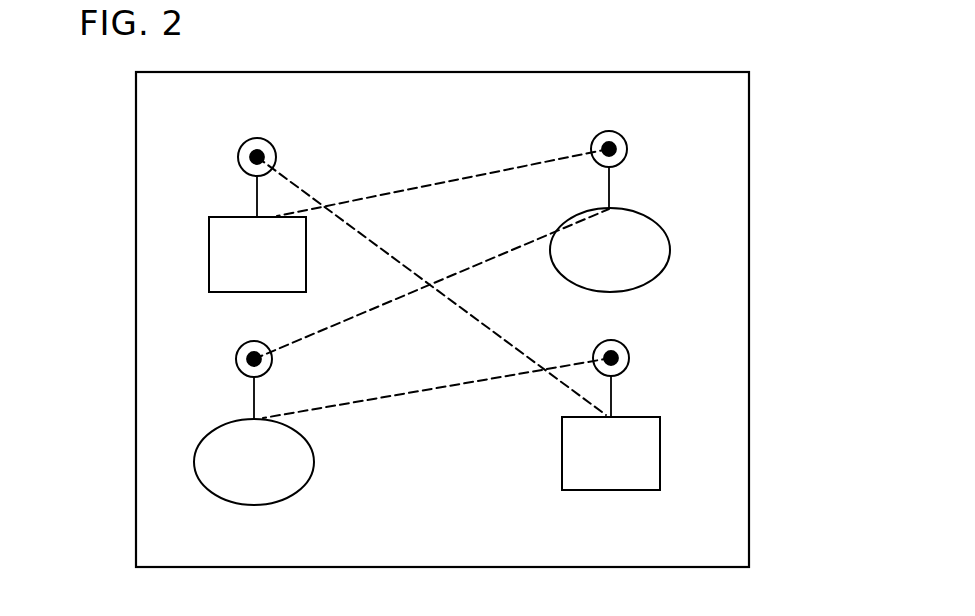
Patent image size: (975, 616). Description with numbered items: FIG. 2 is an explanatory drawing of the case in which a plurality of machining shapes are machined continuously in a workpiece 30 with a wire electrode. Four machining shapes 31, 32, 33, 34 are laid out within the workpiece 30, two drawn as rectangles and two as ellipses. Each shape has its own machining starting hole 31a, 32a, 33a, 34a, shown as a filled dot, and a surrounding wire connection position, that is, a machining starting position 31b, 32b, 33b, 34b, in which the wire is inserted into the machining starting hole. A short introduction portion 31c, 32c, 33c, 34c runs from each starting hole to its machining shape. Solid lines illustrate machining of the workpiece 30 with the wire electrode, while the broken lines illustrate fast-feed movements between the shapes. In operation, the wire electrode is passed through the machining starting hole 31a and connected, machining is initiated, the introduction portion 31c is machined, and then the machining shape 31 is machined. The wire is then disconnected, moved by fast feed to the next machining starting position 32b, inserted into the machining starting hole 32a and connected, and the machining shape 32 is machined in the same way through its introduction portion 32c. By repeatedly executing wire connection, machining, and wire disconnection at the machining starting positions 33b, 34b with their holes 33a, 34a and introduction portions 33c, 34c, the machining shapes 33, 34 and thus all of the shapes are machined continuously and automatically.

The workpiece 30 is at (749, 342).
The machining shape 31 is at (209, 252).
The machining starting hole 31a is at (276, 155).
The machining starting position 31b is at (248, 148).
The introduction portion 31c is at (257, 197).
The machining shape 32 is at (670, 250).
The machining starting hole 32a is at (593, 139).
The machining starting position 32b is at (624, 137).
The introduction portion 32c is at (610, 197).
The machining shape 33 is at (196, 466).
The machining starting hole 33a is at (271, 365).
The machining starting position 33b is at (246, 362).
The introduction portion 33c is at (254, 398).
The machining shape 34 is at (660, 462).
The machining starting hole 34a is at (611, 340).
The machining starting position 34b is at (620, 341).
The introduction portion 34c is at (611, 406).